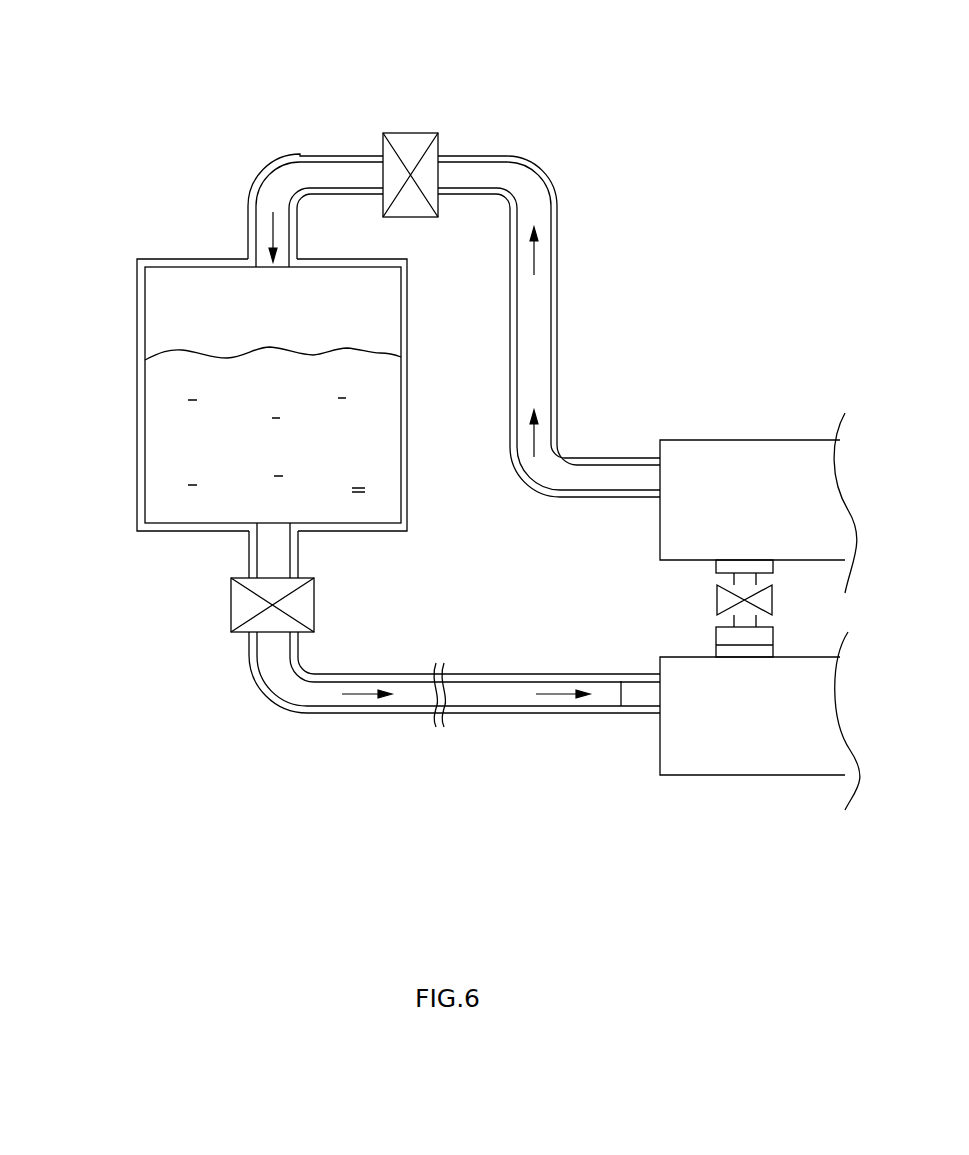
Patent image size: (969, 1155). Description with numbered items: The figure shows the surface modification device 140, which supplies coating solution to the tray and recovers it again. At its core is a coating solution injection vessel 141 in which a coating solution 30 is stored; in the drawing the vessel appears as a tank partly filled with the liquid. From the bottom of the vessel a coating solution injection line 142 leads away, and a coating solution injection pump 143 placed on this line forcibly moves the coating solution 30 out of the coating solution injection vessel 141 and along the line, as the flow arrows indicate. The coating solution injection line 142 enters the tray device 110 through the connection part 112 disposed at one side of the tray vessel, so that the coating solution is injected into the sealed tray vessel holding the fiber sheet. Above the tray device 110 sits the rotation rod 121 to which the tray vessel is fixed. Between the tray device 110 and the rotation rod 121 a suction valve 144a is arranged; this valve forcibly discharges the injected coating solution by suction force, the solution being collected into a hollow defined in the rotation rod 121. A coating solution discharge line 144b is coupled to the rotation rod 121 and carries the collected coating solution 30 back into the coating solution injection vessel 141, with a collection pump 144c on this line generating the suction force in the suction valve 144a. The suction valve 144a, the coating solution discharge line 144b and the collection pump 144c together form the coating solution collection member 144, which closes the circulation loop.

The surface modification device 140 is at (167, 25).
The coating solution injection vessel 141 is at (197, 259).
The coating solution 30 is at (381, 428).
The coating solution injection line 142 is at (257, 682).
The coating solution injection pump 143 is at (230, 603).
The coating solution collection member 144 is at (288, 44).
The suction valve 144a is at (725, 562).
The coating solution discharge line 144b is at (270, 175).
The collection pump 144c is at (402, 142).
The rotation rod 121 is at (747, 440).
The tray device 110 is at (735, 776).
The connection part 112 is at (634, 690).